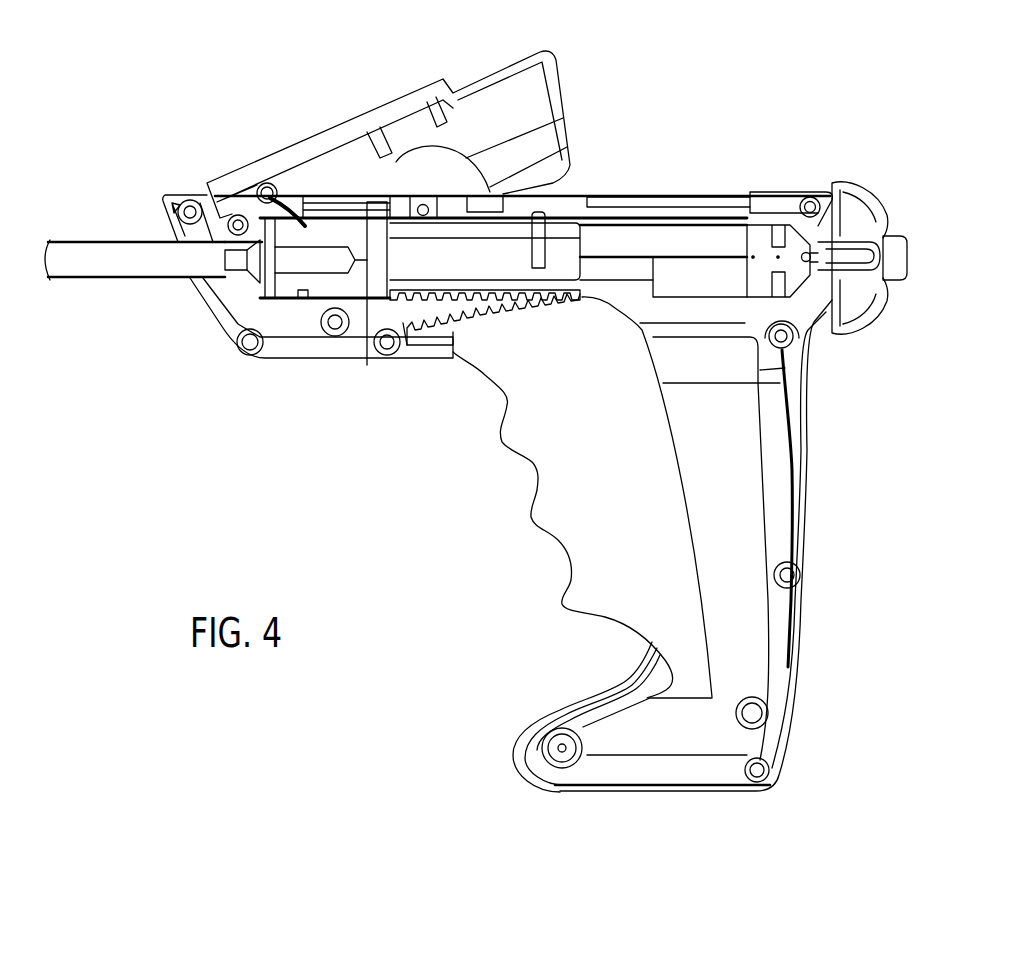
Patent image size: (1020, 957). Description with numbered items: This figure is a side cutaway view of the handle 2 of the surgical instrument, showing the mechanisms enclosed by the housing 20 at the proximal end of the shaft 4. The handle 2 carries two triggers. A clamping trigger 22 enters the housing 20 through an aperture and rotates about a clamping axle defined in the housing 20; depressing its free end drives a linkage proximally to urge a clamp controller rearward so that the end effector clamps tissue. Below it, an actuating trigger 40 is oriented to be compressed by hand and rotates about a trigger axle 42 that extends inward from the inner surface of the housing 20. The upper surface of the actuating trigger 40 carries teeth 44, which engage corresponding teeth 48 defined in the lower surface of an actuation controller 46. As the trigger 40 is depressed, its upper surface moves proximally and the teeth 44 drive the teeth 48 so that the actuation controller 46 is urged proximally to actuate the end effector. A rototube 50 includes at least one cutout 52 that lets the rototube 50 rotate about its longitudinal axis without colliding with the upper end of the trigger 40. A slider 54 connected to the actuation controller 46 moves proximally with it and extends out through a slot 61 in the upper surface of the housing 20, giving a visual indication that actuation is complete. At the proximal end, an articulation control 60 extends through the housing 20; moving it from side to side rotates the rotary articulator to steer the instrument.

The handle 2 is at (760, 74).
The shaft 4 is at (127, 278).
The housing 20 is at (807, 445).
The clamping trigger 22 is at (331, 127).
The actuating trigger 40 is at (530, 467).
The trigger axle 42 is at (564, 768).
The teeth 44 is at (400, 317).
The actuation controller 46 is at (582, 243).
The teeth 48 is at (400, 303).
The rototube 50 is at (706, 297).
The cutout 52 is at (622, 263).
The slider 54 is at (549, 183).
The articulation control 60 is at (864, 197).
The slot 61 is at (699, 198).